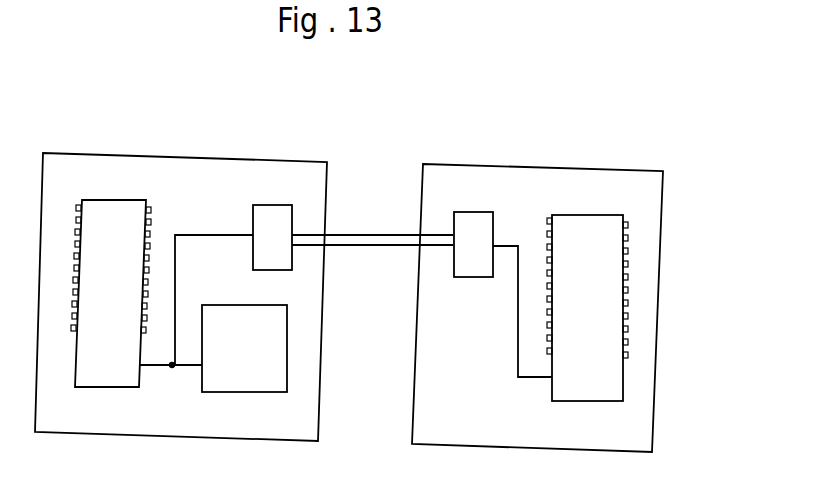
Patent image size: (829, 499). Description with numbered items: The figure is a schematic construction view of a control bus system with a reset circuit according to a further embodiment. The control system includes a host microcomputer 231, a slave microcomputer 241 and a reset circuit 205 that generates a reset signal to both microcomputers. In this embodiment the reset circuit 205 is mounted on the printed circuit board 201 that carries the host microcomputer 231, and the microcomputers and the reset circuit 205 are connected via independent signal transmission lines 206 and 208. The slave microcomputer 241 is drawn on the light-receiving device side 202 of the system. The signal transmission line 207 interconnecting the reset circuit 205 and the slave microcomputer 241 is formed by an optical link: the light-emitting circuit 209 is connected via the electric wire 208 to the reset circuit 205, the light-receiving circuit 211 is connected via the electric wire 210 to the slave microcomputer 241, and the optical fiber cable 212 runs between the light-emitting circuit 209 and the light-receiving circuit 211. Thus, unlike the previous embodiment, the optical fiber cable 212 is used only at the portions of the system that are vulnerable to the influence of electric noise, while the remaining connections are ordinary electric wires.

The printed circuit board 201 is at (152, 159).
The light-receiving device 202 is at (535, 170).
The reset circuit 205 is at (252, 393).
The signal transmission line 206 is at (158, 367).
The signal transmission line 207 is at (370, 213).
The electric wire 208 is at (210, 233).
The light-emitting circuit 209 is at (275, 203).
The electric wire 210 is at (515, 350).
The light-receiving circuit 211 is at (467, 212).
The optical fiber cable 212 is at (377, 247).
The host microcomputer 231 is at (75, 363).
The slave microcomputer 241 is at (577, 400).